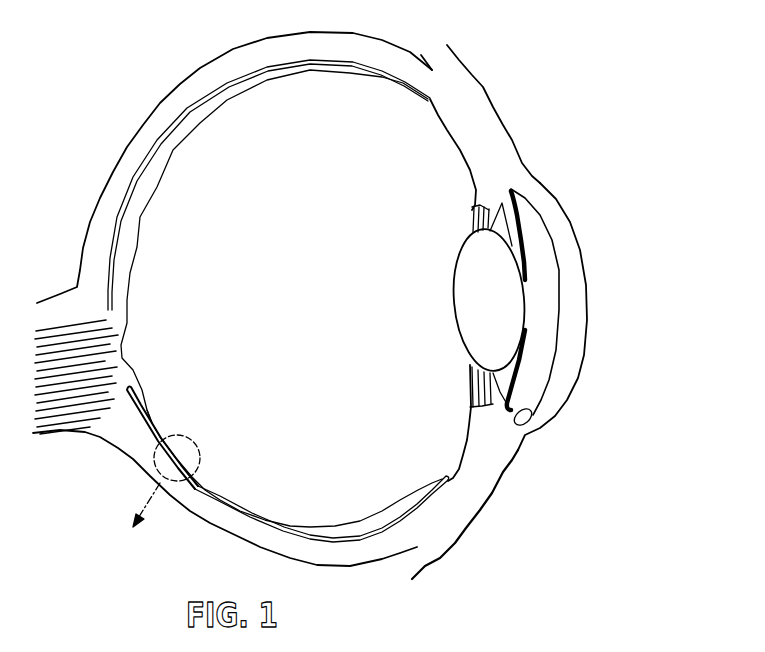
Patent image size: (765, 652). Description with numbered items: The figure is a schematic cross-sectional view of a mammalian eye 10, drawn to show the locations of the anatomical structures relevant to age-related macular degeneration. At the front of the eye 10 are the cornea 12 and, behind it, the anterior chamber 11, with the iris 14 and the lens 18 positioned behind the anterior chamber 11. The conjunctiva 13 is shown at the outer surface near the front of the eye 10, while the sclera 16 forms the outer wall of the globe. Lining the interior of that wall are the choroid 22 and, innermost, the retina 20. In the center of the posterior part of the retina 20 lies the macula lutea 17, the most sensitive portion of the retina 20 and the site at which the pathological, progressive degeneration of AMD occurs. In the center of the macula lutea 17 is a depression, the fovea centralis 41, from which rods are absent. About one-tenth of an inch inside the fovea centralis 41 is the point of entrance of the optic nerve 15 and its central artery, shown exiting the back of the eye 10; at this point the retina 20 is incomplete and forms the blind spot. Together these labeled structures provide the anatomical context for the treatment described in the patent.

The mammalian eye 10 is at (579, 113).
The anterior chamber 11 is at (549, 211).
The cornea 12 is at (572, 245).
The conjunctiva 13 is at (459, 57).
The iris 14 is at (534, 233).
The optic nerve 15 is at (83, 406).
The sclera 16 is at (373, 553).
The macula lutea 17 is at (158, 437).
The lens 18 is at (495, 319).
The retina 20 is at (145, 388).
The choroid 22 is at (207, 502).
The fovea centralis 41 is at (152, 417).